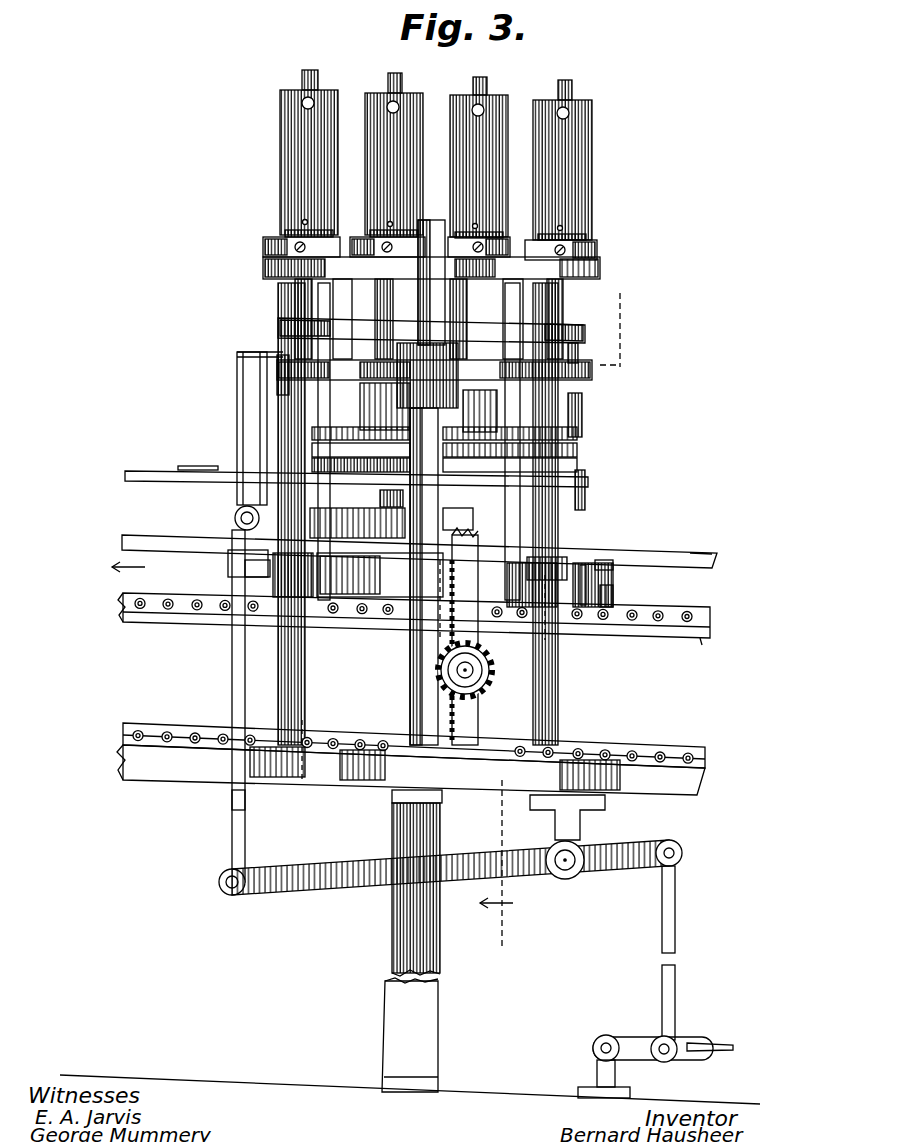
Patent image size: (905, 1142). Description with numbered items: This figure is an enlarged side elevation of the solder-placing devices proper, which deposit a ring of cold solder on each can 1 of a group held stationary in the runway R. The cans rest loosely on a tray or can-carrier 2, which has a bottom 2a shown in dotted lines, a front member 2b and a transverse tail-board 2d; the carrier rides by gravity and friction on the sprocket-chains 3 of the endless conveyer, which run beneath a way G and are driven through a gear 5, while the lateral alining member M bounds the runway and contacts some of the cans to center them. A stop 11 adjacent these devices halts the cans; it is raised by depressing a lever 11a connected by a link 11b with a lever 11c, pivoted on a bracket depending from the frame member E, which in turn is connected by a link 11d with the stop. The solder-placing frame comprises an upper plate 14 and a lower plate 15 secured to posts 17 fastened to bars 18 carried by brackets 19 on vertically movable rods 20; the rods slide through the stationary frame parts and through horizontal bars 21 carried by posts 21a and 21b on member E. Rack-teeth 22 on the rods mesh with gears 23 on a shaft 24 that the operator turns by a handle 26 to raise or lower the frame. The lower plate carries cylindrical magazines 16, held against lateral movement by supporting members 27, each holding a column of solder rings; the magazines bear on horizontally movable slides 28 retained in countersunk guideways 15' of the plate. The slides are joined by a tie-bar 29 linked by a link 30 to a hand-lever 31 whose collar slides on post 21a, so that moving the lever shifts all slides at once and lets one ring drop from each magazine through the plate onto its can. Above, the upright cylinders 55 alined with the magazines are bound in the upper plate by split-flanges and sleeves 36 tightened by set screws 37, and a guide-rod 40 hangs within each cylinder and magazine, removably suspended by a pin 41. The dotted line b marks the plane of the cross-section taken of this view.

The cans 1 is at (580, 580).
The tray or can-carrier 2 is at (590, 575).
The bottom of carrier 2a is at (613, 592).
The front member of carrier 2b is at (228, 563).
The tail-board or rear member 2d is at (600, 567).
The sprocket-chains 3 is at (645, 752).
The gear 5 is at (672, 614).
The stop 11 is at (225, 465).
The lever 11a is at (680, 1042).
The link 11b is at (676, 990).
The lever 11c is at (350, 867).
The link 11d is at (262, 803).
The upper plate 14 is at (266, 268).
The lower plate 15 is at (390, 474).
The countersunk guideways 15' is at (641, 490).
The cylindrical magazines 16 is at (608, 403).
The posts 17 is at (343, 297).
The bars 18 is at (592, 377).
The brackets 19 is at (427, 375).
The vertically movable rods 20 is at (430, 220).
The horizontal bars 21 is at (280, 320).
The post 21a is at (570, 355).
The post 21b is at (287, 333).
The rack-teeth 22 is at (440, 696).
The gears 23 is at (440, 671).
The shaft 24 is at (473, 670).
The handle 26 is at (450, 625).
The supporting members 27 is at (317, 447).
The slides 28 is at (446, 483).
The tie-bar 29 is at (518, 472).
The link 30 is at (400, 470).
The hand-lever 31 is at (200, 458).
The annular split-flanges and sleeves 36 is at (298, 246).
The set screws 37 is at (280, 228).
The guide-rod 40 is at (392, 76).
The pin 41 is at (392, 104).
The cylinder 55 is at (292, 128).
The section line b— b is at (563, 620).
The frame member E is at (660, 785).
The frame element G is at (700, 640).
The pillar II is at (428, 994).
The lateral alining member M is at (697, 556).
The runway R is at (138, 573).